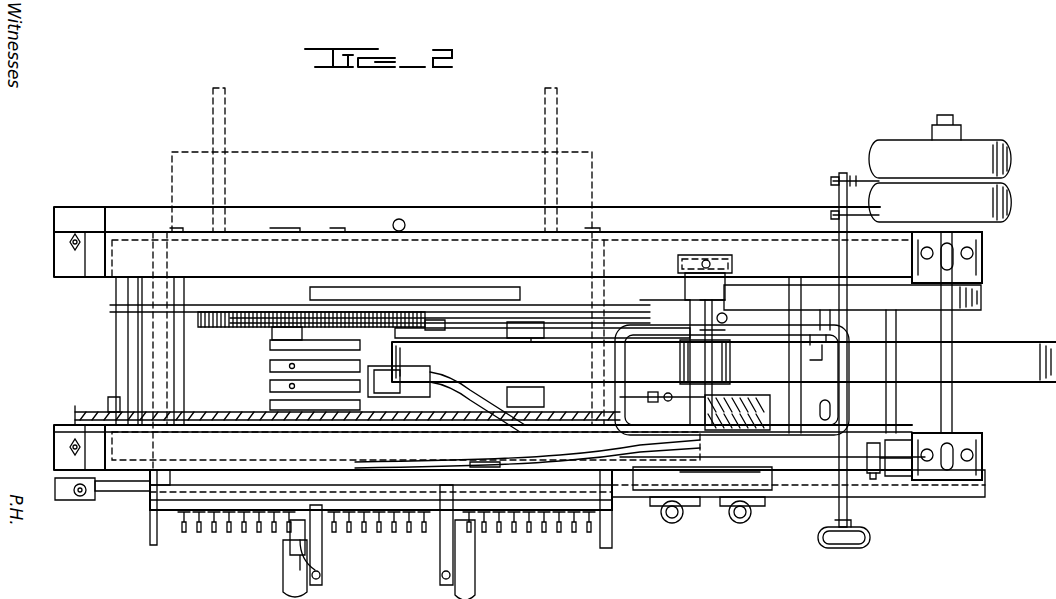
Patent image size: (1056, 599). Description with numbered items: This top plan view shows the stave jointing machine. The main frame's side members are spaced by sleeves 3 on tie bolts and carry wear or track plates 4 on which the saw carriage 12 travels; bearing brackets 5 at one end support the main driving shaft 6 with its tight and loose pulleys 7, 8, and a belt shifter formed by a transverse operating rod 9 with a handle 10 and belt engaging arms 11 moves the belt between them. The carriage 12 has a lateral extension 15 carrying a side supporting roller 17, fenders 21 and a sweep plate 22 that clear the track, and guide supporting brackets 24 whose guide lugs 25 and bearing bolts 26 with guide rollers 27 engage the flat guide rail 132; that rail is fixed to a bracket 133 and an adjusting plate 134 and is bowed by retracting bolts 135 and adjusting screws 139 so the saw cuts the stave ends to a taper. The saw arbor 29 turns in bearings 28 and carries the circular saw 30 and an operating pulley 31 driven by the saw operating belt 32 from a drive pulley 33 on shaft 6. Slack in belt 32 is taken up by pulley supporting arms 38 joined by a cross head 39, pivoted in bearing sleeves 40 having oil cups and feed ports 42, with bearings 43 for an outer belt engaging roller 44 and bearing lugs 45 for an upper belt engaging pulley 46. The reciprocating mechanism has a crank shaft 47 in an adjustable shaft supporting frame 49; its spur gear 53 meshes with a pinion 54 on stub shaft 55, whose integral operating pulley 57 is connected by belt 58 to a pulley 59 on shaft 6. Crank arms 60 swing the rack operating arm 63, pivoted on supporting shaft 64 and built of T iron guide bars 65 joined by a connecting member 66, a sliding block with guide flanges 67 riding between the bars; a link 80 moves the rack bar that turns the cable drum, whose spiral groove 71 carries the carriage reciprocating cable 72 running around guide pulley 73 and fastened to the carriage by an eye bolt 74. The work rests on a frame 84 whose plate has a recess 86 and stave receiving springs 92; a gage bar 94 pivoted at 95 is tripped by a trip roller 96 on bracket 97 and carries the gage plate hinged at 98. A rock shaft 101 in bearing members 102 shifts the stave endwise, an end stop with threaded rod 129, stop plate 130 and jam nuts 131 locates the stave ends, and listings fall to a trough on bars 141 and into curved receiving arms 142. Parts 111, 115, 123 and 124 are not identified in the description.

The spacing sleeves 3 is at (184, 352).
The wear or track plates 4 is at (303, 237).
The bearing brackets 5 is at (982, 274).
The main driving shaft 6 is at (952, 326).
The tight pulley 7 is at (1005, 204).
The loose pulley 8 is at (1005, 162).
The operating rod 9 is at (839, 200).
The handle 10 is at (845, 550).
The belt engaging arms 11 is at (855, 183).
The saw carriage 12 is at (850, 366).
The lateral extension 15 is at (730, 286).
The side supporting roller 17 is at (690, 252).
The fenders 21 is at (712, 262).
The sweep plate 22 is at (940, 482).
The guide supporting brackets 24 is at (665, 522).
The guide lugs 25 is at (650, 500).
The bearing bolts 26 is at (672, 522).
The guide rollers 27 is at (690, 492).
The bearings 28 is at (680, 303).
The saw arbor 29 is at (740, 392).
The circular saw 30 is at (710, 492).
The operating pulley 31 is at (740, 330).
The saw operating belt 32 is at (552, 346).
The drive pulley 33 is at (616, 336).
The pulley supporting arms 38 is at (488, 328).
The cross head 39 is at (682, 352).
The bearing sleeves 40 is at (832, 320).
The oil cups and feed ports 42 is at (820, 300).
The bearings 43 is at (456, 316).
The outer belt engaging roller 44 is at (492, 322).
The bearing lugs 45 is at (526, 332).
The upper belt engaging pulley 46 is at (600, 300).
The crank shaft 47 is at (276, 305).
The adjustable shaft supporting frame 49 is at (116, 320).
The spur gear 53 is at (222, 318).
The spur gear pinion 54 is at (420, 306).
The stub shaft 55 is at (395, 333).
The operating pulley 57 is at (345, 292).
The belt 58 is at (530, 305).
The pulley 59 is at (985, 297).
The crank arms 60 is at (312, 355).
The rack operating arm 63 is at (282, 370).
The supporting shaft 64 is at (275, 396).
The T iron guide bars 65 is at (436, 372).
The connecting member 66 is at (399, 381).
The guide flanges 67 is at (362, 422).
The spirally arranged groove 71 is at (760, 428).
The carriage reciprocating cable 72 is at (194, 410).
The guide pulley 73 is at (90, 412).
The eye bolt 74 is at (655, 394).
The link 80 is at (456, 432).
The frame 84 is at (154, 542).
The recess 86 is at (400, 522).
The stave receiving springs 92 is at (325, 548).
The supporting and operating bar 94 is at (440, 470).
The pivotal connection 95 is at (490, 462).
The trip roller 96 is at (890, 480).
The bracket 97 is at (873, 478).
The hinge 98 is at (432, 464).
The rock shaft 101 is at (420, 578).
The bearing members 102 is at (272, 545).
The rack bar 111 is at (381, 490).
The clip 115 is at (388, 484).
The bracket 123 is at (76, 504).
The rod 124 is at (120, 492).
The threaded rod 129 is at (148, 516).
The stop plate 130 is at (206, 534).
The jam nuts 131 is at (145, 556).
The guide rail 132 is at (720, 492).
The bracket 133 is at (810, 500).
The adjusting plate 134 is at (216, 536).
The retracting bolts 135 is at (532, 542).
The adjusting screws 139 is at (256, 556).
The bars 141 is at (168, 274).
The listings receiving arms 142 is at (225, 128).